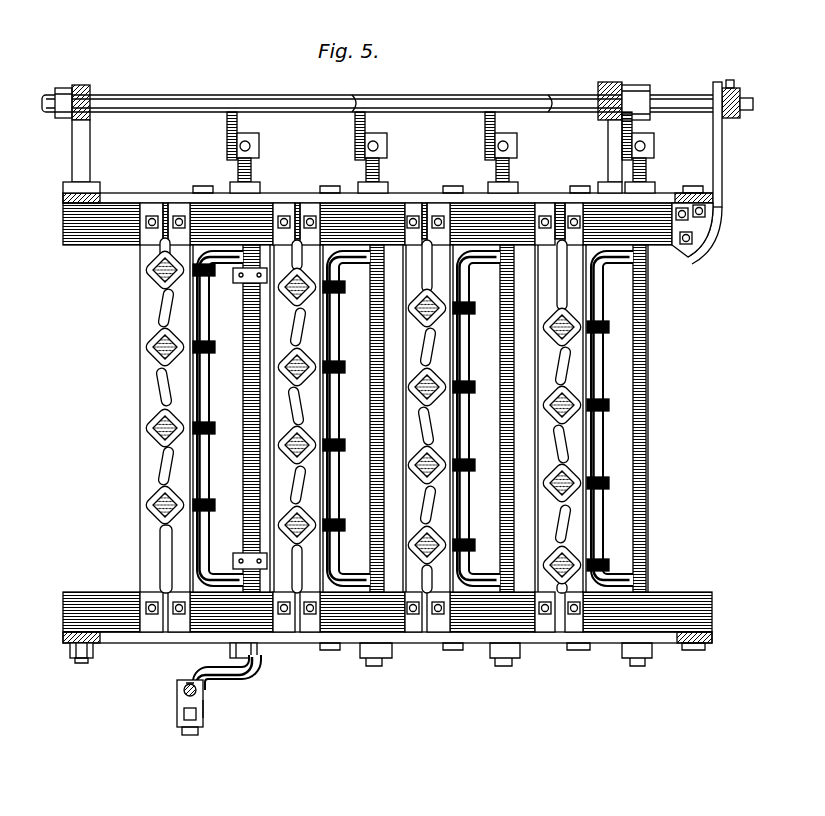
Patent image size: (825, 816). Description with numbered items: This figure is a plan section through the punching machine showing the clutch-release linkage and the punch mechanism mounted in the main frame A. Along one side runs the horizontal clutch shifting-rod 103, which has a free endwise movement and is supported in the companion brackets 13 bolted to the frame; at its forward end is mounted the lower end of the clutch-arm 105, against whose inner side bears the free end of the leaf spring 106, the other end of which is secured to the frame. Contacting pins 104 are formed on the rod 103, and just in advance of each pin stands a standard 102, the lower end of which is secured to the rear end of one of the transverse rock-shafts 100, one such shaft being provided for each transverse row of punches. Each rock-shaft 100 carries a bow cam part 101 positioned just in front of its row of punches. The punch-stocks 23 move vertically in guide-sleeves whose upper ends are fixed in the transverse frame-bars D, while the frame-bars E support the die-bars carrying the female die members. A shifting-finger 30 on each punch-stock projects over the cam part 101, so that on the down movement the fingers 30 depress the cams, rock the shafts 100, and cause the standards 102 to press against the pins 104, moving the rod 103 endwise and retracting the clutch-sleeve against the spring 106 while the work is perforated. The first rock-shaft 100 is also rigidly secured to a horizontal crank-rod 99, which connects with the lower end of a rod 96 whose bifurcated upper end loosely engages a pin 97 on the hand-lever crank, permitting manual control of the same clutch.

The clutch shifting-rod 103 is at (468, 100).
The brackets 13 is at (74, 147).
The clutch-arm 105 is at (738, 86).
The spring 106 is at (722, 150).
The contacting pins 104 is at (228, 130).
The standard 102 is at (238, 145).
The rock-shafts 100 is at (240, 168).
The bow cam part 101 is at (203, 477).
The shifting-finger 30 is at (198, 425).
The punch-stocks 23 is at (160, 422).
The transverse frame-bars D is at (168, 314).
The main frame A is at (170, 202).
The frame-bars E is at (650, 237).
The pin 97 is at (70, 650).
The rod 96 is at (178, 690).
The crank-rod 99 is at (203, 727).